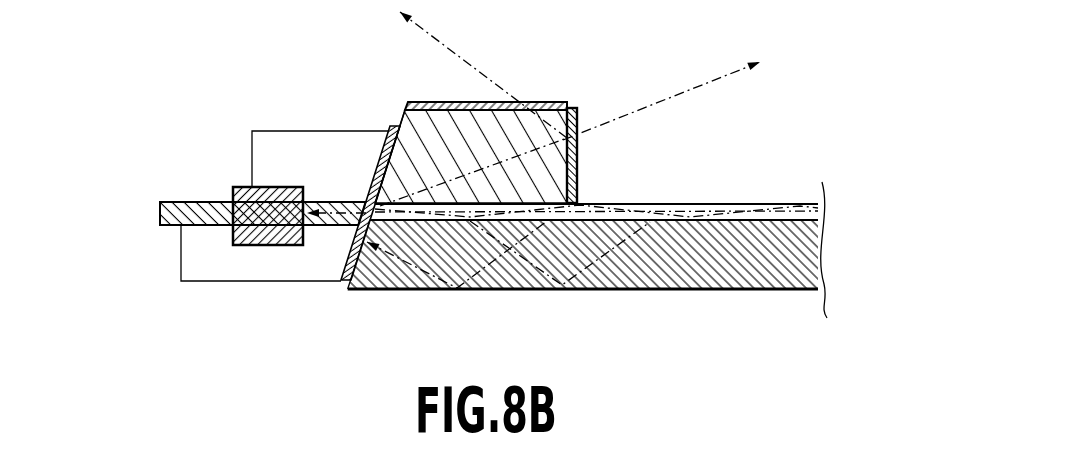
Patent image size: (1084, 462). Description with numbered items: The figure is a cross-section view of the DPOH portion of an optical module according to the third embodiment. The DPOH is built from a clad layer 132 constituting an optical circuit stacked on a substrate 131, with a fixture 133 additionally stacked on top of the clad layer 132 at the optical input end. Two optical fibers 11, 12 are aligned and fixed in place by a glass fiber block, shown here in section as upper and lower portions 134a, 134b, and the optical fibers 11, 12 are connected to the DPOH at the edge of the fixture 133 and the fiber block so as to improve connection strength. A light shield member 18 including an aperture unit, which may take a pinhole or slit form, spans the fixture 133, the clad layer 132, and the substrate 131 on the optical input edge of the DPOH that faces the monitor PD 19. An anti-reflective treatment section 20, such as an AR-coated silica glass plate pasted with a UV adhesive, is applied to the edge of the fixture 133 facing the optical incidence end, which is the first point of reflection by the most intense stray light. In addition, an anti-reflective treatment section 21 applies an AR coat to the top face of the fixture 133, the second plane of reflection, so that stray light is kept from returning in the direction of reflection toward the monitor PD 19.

The optical fiber 11 is at (178, 202).
The optical fiber 12 is at (263, 213).
The light shield member 18 is at (366, 198).
The monitor PD 19 is at (243, 187).
The anti-reflective treatment section 20 is at (577, 160).
The anti-reflective treatment section 21 is at (550, 100).
The substrate 131 is at (596, 290).
The clad layer 132 is at (713, 204).
The fixture 133 is at (398, 126).
The upper wiring 134a is at (300, 131).
The lower wiring 134b is at (259, 282).